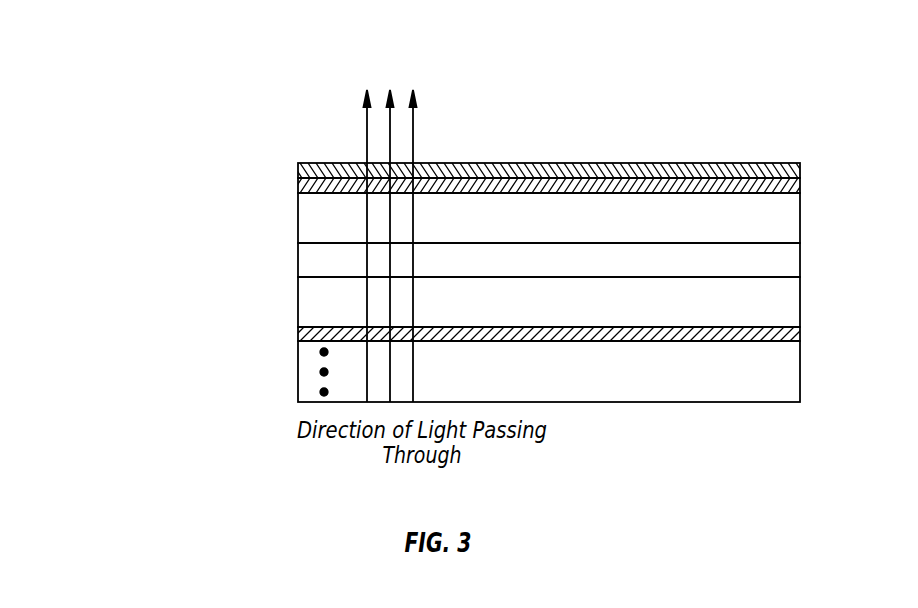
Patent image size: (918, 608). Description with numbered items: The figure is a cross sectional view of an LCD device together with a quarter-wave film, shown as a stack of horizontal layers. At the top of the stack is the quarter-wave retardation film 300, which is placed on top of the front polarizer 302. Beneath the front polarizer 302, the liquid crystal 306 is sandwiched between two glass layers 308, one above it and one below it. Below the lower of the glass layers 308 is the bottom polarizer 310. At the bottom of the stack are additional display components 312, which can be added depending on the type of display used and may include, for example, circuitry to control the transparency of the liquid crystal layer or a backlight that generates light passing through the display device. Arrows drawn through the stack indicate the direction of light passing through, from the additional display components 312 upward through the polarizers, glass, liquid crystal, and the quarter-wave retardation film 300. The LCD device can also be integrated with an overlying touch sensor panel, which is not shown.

The quarter-wave retardation film 300 is at (575, 163).
The front polarizer 302 is at (298, 190).
The liquid crystal 306 is at (549, 260).
The glass layers 308 is at (549, 260).
The bottom polarizer 310 is at (298, 334).
The additional display components 312 is at (297, 400).